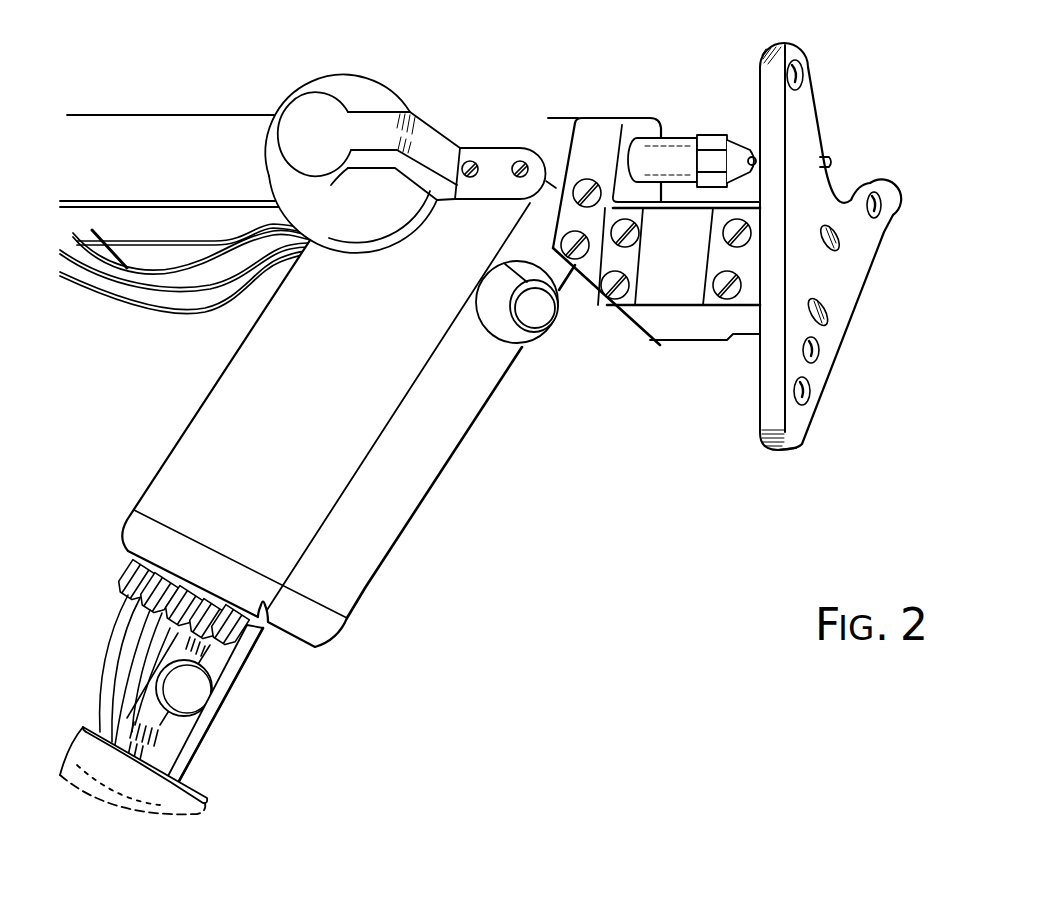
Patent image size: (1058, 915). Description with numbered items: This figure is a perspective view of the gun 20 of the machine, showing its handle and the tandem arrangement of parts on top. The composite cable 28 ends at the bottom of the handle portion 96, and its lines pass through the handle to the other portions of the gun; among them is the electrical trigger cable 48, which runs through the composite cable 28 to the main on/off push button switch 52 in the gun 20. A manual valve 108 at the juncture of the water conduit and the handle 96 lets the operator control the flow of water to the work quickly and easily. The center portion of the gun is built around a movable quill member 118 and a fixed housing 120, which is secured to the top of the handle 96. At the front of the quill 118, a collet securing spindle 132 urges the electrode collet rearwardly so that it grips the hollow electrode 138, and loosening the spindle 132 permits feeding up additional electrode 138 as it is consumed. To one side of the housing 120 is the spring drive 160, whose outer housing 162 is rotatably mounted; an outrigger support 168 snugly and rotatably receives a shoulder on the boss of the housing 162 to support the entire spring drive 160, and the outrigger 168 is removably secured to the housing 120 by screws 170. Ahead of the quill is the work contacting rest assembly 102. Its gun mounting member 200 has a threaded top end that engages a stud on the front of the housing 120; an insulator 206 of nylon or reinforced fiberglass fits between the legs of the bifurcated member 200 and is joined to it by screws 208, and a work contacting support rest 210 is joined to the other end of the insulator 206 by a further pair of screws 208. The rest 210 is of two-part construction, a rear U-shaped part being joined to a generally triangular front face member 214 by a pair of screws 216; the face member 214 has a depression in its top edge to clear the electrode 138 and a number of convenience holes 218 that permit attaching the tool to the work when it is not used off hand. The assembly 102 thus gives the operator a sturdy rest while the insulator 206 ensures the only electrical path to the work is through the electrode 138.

The gun 20 is at (351, 497).
The composite cable 28 is at (218, 801).
The electrical trigger cable 48 is at (199, 752).
The main on/off push button switch 52 is at (548, 332).
The handle portion 96 is at (440, 480).
The work contacting rest assembly 102 is at (749, 248).
The manual valve 108 is at (213, 678).
The quill member 118 is at (678, 140).
The fixed housing 120 is at (567, 117).
The collet securing spindle 132 is at (740, 136).
The hollow electrode 138 is at (829, 155).
The spring drive 160 is at (367, 136).
The outer housing 162 is at (313, 76).
The outrigger support 168 is at (442, 130).
The screws 170 is at (474, 161).
The gun mounting member 200 is at (654, 220).
The insulator 206 is at (682, 345).
The screws 208 is at (583, 260).
The work contacting support rest 210 is at (857, 265).
The front face member 214 is at (827, 314).
The screws 216 is at (837, 247).
The convenience holes 218 is at (803, 74).